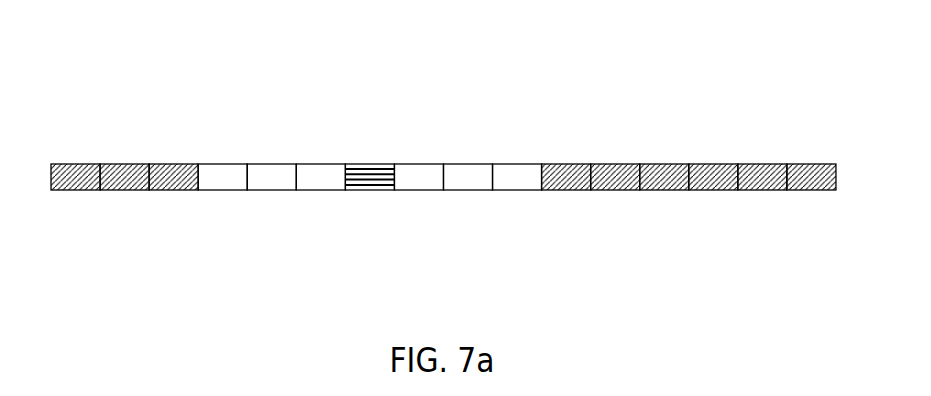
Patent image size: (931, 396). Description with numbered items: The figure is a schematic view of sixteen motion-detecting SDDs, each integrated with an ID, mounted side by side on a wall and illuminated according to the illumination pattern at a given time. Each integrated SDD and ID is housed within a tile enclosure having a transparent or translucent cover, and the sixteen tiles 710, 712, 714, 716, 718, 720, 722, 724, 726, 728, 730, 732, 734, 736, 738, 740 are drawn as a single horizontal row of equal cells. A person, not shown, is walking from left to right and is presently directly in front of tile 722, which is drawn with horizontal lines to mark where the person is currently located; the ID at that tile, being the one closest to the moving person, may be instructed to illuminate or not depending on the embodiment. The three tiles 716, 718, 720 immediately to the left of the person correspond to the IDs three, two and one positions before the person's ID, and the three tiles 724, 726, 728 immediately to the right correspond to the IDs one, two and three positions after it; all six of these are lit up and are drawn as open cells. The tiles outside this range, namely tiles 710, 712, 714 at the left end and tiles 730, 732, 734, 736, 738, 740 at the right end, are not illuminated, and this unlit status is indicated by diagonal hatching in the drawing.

The tile enclosure 710 is at (76, 190).
The tile enclosure 712 is at (125, 164).
The tile enclosure 714 is at (174, 190).
The tile enclosure 716 is at (223, 164).
The tile enclosure 718 is at (272, 190).
The tile enclosure 720 is at (321, 164).
The tile enclosure 722 is at (370, 190).
The tile enclosure 724 is at (419, 164).
The tile enclosure 726 is at (468, 190).
The tile enclosure 728 is at (517, 164).
The tile enclosure 730 is at (566, 190).
The tile enclosure 732 is at (615, 164).
The tile enclosure 734 is at (664, 190).
The tile enclosure 736 is at (713, 164).
The tile enclosure 738 is at (762, 190).
The tile enclosure 740 is at (811, 164).